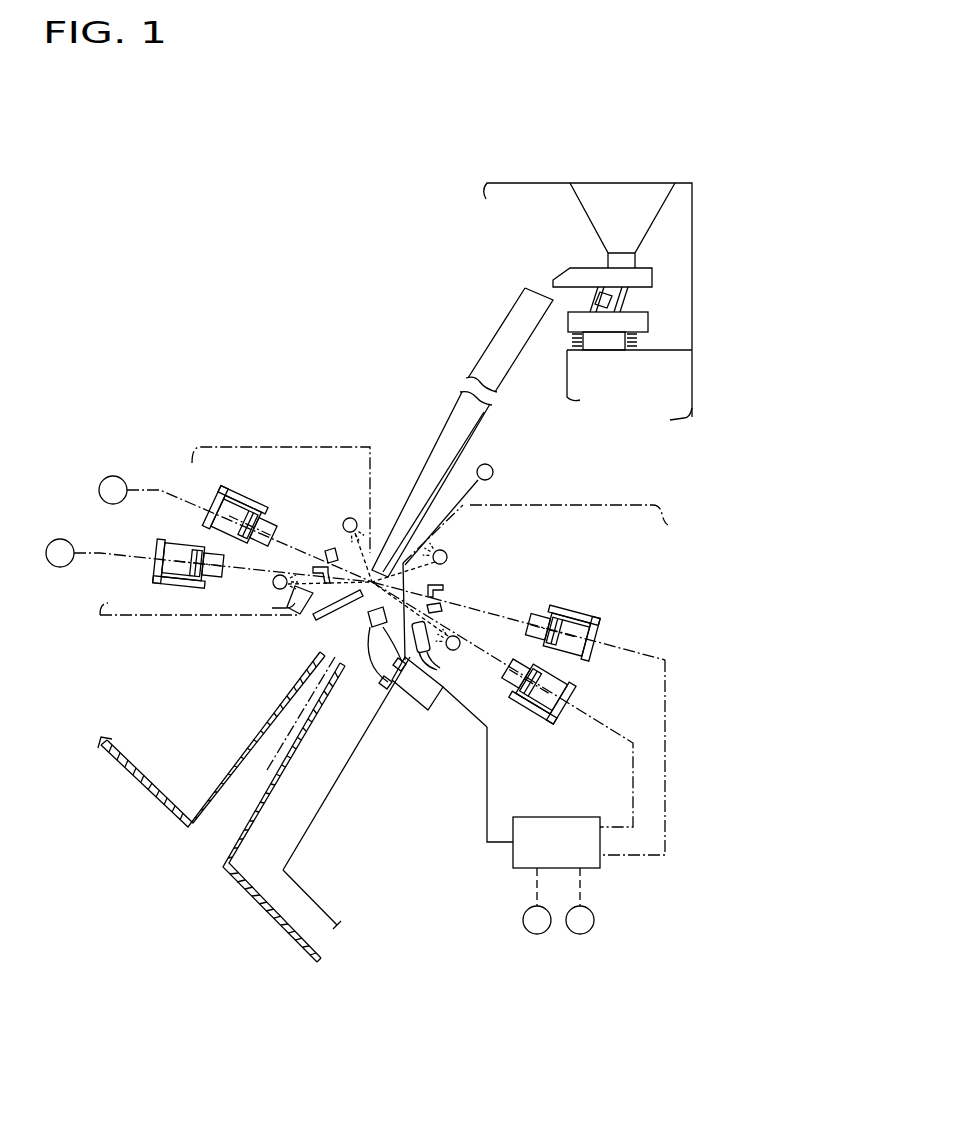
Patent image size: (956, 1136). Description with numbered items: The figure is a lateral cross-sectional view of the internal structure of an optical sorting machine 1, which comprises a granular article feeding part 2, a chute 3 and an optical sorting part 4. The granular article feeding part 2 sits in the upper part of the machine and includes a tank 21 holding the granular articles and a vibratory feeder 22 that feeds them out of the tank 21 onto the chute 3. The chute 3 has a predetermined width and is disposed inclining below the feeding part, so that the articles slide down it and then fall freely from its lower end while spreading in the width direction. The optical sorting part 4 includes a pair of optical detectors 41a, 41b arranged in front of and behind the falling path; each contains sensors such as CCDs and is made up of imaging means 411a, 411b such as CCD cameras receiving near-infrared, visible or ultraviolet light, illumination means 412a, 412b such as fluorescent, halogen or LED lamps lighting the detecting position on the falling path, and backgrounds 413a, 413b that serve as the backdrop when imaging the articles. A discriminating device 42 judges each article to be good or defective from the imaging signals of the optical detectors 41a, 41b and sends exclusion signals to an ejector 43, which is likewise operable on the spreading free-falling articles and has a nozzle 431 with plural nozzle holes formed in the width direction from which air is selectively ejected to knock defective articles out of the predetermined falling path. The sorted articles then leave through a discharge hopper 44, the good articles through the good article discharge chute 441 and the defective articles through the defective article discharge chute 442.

The optical sorting machine 1 is at (538, 156).
The granular article feeding part 2 is at (709, 240).
The tank 21 is at (574, 211).
The vibratory feeder 22 is at (567, 267).
The chute 3 is at (420, 315).
The optical sorting part 4 is at (708, 528).
The optical detector 41a is at (344, 442).
The optical detector 41b is at (543, 496).
The imaging means 411a is at (230, 500).
The imaging means 411b is at (577, 662).
The illumination means 412a is at (350, 518).
The illumination means 412b is at (447, 550).
The background 413a is at (322, 550).
The background 413b is at (436, 588).
The discriminating device 42 is at (593, 863).
The ejector 43 is at (370, 704).
The nozzle 431 is at (384, 630).
The discharge hopper 44 is at (150, 692).
The good article discharge chute 441 is at (272, 717).
The defective article discharge chute 442 is at (270, 857).